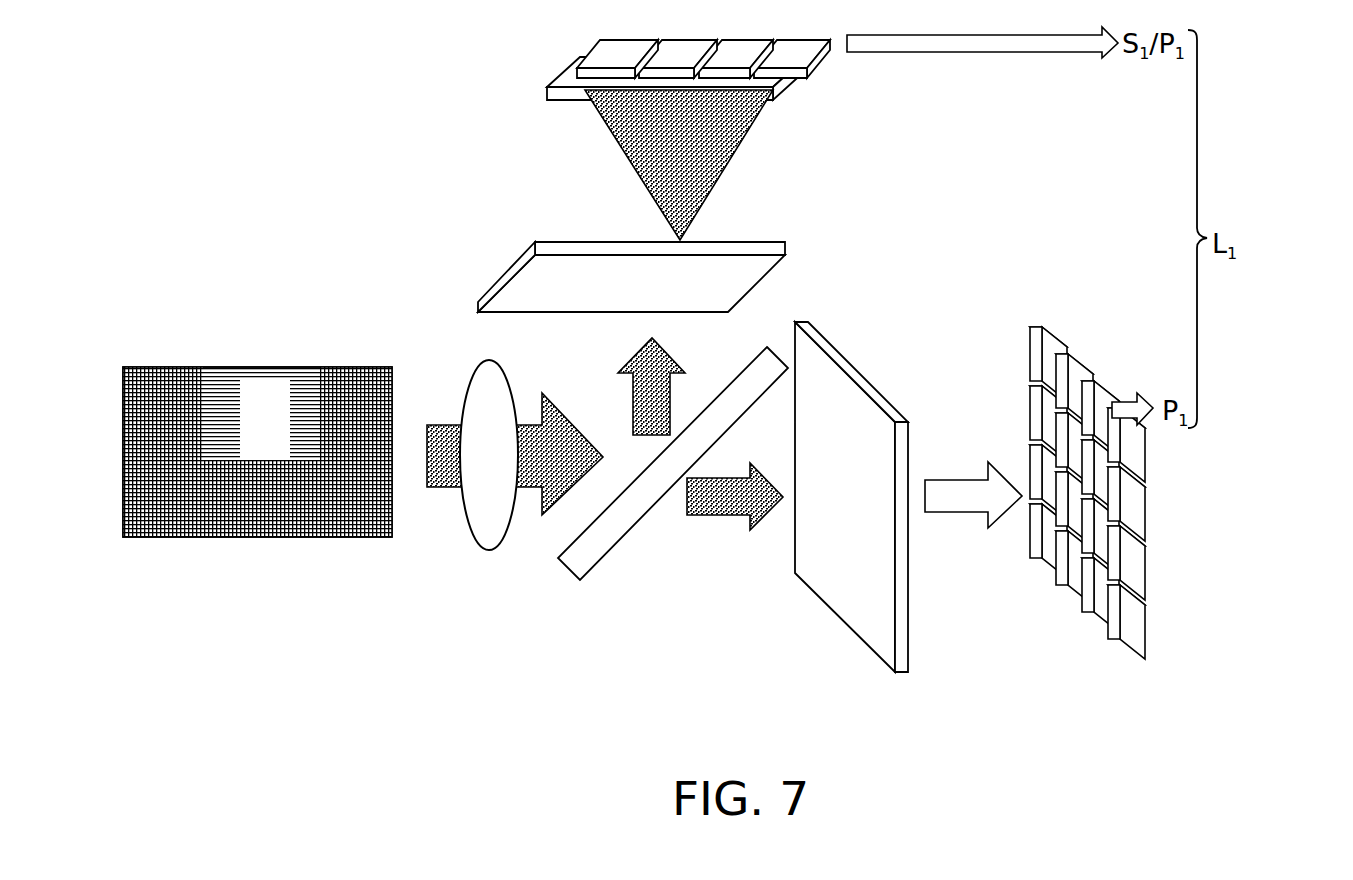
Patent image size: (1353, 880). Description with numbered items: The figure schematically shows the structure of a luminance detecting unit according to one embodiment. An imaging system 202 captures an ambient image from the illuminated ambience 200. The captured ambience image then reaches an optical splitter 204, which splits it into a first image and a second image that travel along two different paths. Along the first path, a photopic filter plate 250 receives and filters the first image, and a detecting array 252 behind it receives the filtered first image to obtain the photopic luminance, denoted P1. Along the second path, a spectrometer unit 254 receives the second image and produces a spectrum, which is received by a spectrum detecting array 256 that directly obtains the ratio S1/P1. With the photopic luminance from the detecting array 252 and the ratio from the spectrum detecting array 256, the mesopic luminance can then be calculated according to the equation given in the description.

The illuminated ambience 200 is at (292, 383).
The imaging system 202 is at (498, 530).
The optical splitter 204 is at (613, 533).
The photopic filter plate 250 is at (910, 638).
The detecting array 252 is at (1145, 650).
The spectrometer unit 254 is at (785, 245).
The spectrum detecting array 256 is at (783, 83).